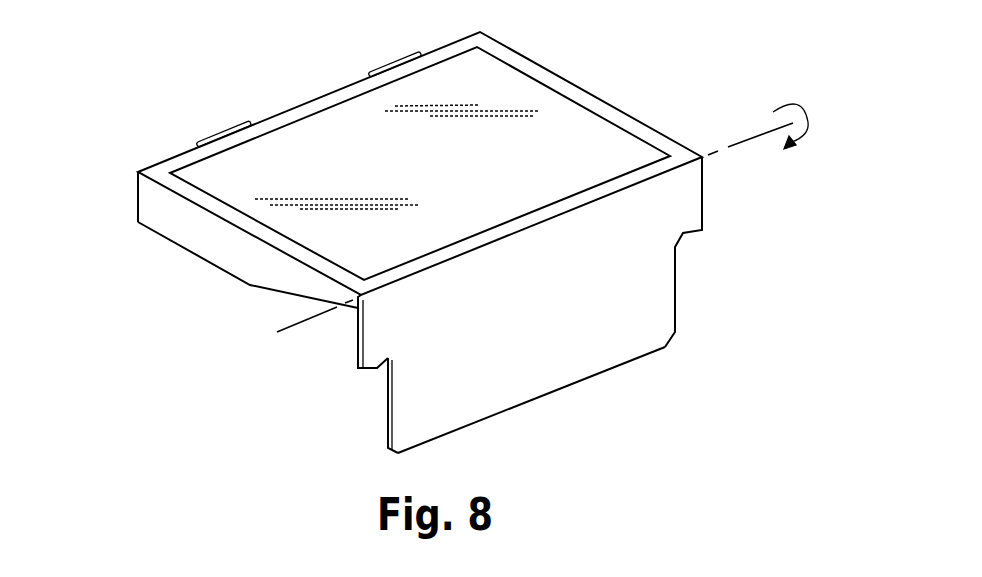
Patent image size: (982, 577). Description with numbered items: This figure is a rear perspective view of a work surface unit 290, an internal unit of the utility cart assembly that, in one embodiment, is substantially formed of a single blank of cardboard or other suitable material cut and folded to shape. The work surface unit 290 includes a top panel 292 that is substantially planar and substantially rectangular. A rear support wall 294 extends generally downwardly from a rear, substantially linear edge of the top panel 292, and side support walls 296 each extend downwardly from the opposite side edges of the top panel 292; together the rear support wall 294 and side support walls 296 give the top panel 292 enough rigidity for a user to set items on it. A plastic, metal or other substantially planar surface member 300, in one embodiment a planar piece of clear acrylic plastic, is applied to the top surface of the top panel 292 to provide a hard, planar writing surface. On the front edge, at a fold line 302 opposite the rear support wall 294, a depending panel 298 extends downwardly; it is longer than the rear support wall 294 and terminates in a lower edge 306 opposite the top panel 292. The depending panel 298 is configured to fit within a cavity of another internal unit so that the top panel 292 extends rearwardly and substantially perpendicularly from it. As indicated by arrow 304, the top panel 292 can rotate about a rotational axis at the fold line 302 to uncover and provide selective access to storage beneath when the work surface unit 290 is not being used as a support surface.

The work surface unit 290 is at (229, 80).
The top panel 292 is at (597, 105).
The rear support wall 294 is at (138, 192).
The side support walls 296 is at (220, 248).
The depending panel 298 is at (677, 212).
The surface member 300 is at (500, 82).
The fold line 302 is at (387, 293).
The arrow 304 is at (802, 103).
The lower edge 306 is at (632, 360).